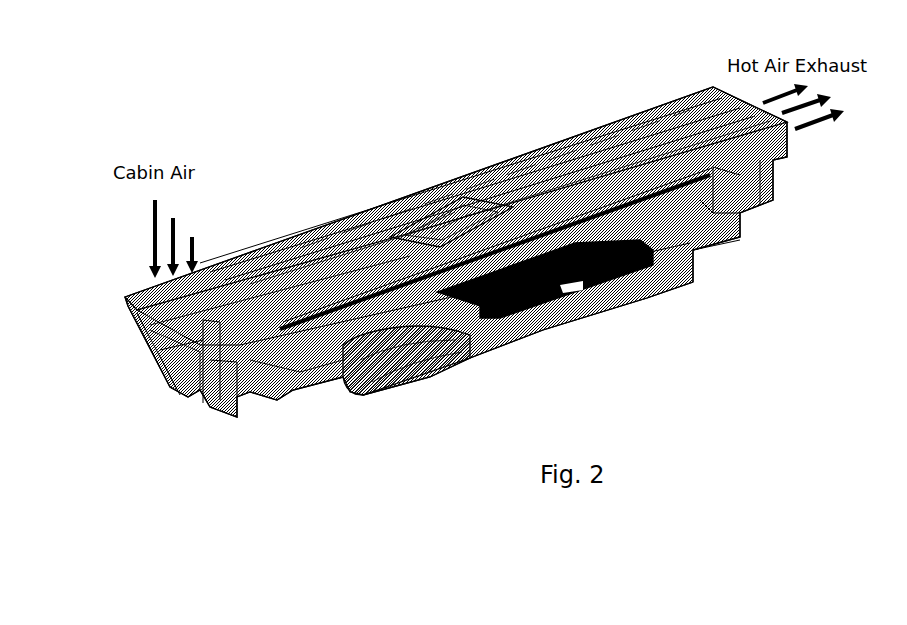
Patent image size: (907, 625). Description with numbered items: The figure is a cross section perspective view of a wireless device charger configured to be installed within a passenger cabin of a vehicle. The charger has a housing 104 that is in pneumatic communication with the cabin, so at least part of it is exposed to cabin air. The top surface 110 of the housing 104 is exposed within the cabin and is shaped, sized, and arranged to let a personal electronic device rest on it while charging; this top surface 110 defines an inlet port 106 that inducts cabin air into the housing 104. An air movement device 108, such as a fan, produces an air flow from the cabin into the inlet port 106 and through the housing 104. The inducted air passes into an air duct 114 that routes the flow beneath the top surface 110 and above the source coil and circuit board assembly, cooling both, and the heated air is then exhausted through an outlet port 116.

The housing 104 is at (293, 390).
The inlet port 106 is at (128, 295).
The air movement device 108 is at (607, 283).
The top surface 110 is at (413, 197).
The air duct 114 is at (410, 330).
The outlet port 116 is at (787, 143).